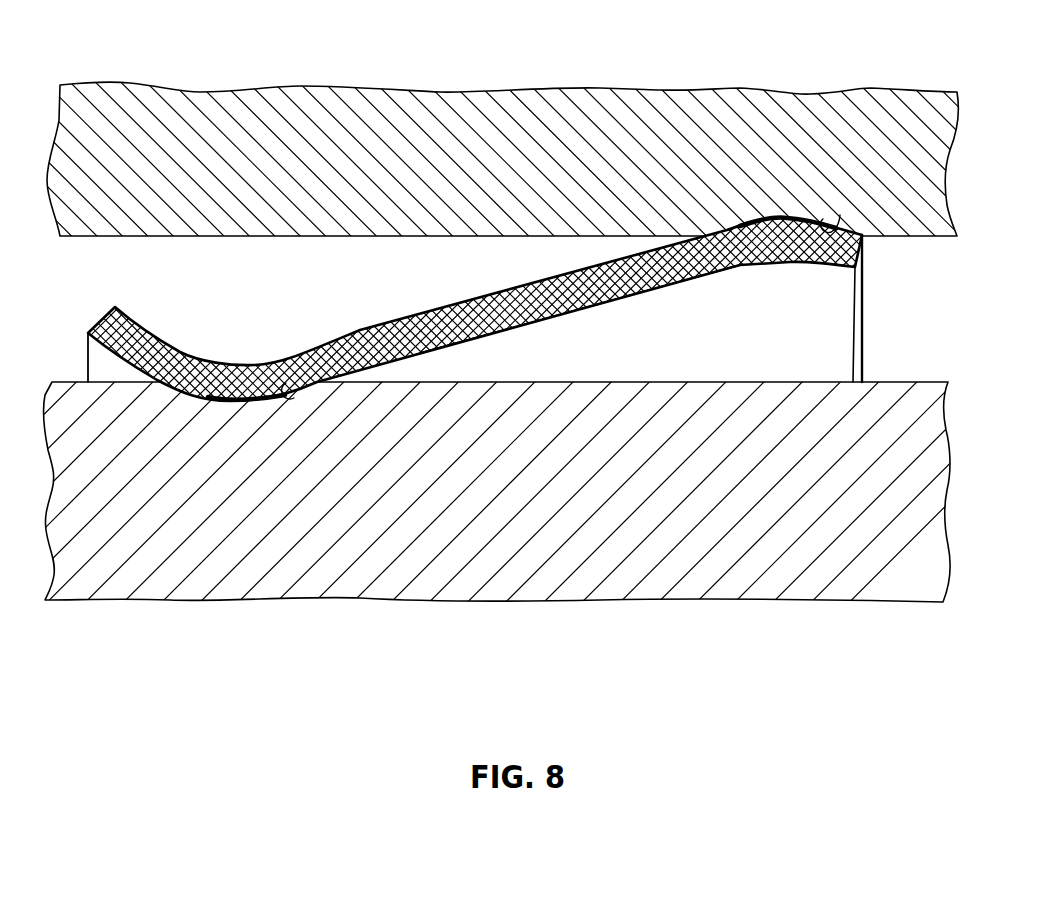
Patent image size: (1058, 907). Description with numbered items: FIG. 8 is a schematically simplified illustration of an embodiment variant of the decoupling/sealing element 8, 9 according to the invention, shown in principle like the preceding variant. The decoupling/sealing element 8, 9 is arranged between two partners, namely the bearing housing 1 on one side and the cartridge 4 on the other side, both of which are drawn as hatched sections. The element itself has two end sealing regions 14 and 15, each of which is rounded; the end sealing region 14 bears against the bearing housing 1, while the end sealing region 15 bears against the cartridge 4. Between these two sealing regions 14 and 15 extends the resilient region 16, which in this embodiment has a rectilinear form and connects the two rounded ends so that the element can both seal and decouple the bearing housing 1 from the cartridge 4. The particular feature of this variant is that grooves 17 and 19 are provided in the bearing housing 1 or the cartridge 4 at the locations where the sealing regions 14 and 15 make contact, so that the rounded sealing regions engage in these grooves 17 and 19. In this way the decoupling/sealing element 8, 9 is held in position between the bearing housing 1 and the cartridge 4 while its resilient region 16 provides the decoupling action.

The bearing housing 1 is at (355, 95).
The cartridge 4 is at (850, 577).
The decoupling/sealing element 8 is at (545, 357).
The decoupling/sealing element 9 is at (545, 368).
The end sealing region 14 is at (784, 217).
The end sealing region 15 is at (245, 401).
The resilient region 16 is at (554, 281).
The groove 17 is at (294, 398).
The groove 19 is at (840, 215).